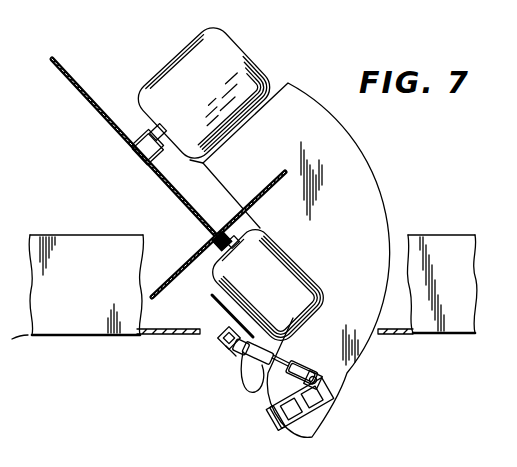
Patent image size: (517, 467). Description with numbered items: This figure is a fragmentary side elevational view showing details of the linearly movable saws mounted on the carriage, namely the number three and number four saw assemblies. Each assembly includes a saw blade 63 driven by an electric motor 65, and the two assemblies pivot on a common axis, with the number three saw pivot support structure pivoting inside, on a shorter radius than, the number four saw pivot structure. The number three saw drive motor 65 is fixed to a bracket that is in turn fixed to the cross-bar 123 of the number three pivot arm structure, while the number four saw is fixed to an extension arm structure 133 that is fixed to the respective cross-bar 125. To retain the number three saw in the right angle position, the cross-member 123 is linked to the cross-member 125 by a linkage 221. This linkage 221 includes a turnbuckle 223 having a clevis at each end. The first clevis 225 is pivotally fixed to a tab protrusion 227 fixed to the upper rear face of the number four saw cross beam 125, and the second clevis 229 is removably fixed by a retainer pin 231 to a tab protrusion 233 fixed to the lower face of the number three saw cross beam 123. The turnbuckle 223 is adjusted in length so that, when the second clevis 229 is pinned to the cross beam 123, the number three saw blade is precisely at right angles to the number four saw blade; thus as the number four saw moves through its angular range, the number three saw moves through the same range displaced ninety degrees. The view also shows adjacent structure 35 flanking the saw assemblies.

The support 35 is at (87, 235).
The extension arm structure 133 is at (368, 174).
The electric motor 65 is at (172, 64).
The saw blade 63 is at (197, 252).
The cross-bar 123 is at (217, 334).
The tab protrusion 233 is at (230, 349).
The retainer pin 231 is at (240, 354).
The second clevis 229 is at (247, 361).
The linkage 221 is at (322, 348).
The turnbuckle 223 is at (296, 348).
The first clevis 225 is at (291, 371).
The tab protrusion 227 is at (318, 377).
The cross-bar 125 is at (289, 423).